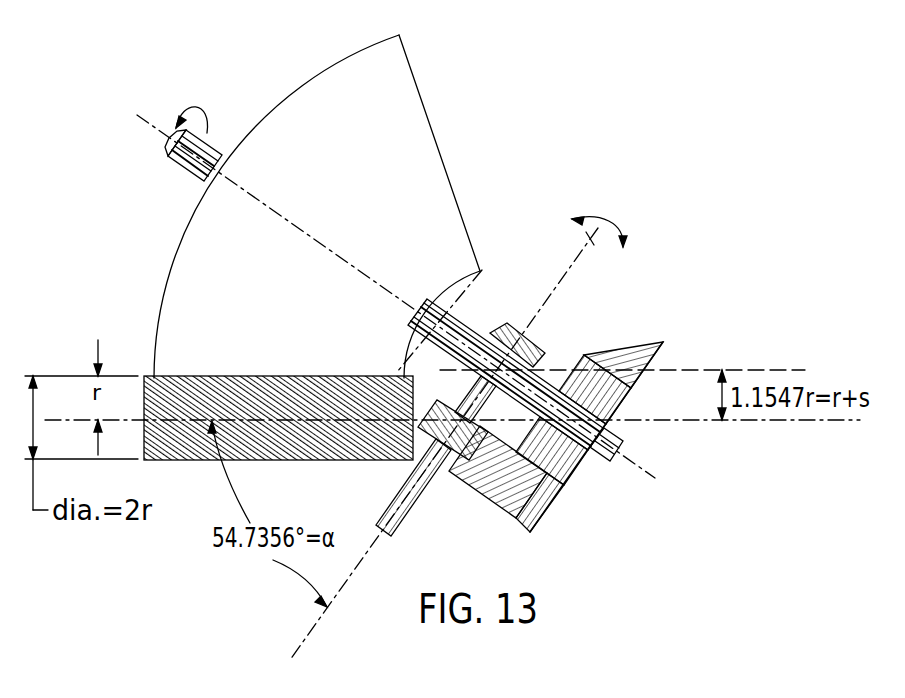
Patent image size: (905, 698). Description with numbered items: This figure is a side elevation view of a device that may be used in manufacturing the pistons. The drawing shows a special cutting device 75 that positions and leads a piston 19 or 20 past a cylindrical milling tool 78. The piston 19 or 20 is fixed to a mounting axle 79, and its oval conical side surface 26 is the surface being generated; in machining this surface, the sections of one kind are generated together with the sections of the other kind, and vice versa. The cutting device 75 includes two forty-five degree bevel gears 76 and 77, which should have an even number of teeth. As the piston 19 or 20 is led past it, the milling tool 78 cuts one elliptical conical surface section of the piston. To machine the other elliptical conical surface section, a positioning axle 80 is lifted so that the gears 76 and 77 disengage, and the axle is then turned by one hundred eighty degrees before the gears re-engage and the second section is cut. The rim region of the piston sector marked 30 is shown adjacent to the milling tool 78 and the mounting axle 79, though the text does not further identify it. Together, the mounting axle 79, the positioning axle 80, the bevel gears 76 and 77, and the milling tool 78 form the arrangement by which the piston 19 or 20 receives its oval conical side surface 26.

The piston 19 is at (354, 205).
The piston 20 is at (354, 205).
The oval conical side surface 26 is at (354, 205).
The disc rim 30 is at (297, 88).
The special cutting device 75 is at (452, 492).
The bevel gear 76 is at (624, 346).
The bevel gear 77 is at (503, 520).
The cylindrical milling tool 78 is at (318, 374).
The mounting axle 79 is at (463, 323).
The positioning axle 80 is at (408, 523).